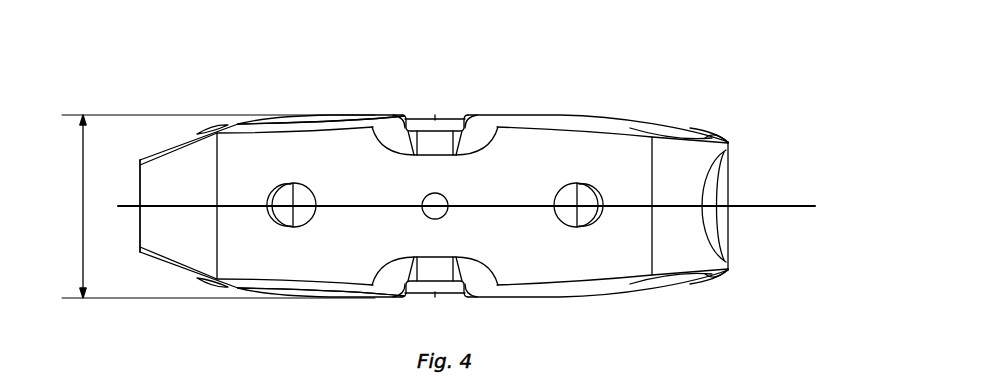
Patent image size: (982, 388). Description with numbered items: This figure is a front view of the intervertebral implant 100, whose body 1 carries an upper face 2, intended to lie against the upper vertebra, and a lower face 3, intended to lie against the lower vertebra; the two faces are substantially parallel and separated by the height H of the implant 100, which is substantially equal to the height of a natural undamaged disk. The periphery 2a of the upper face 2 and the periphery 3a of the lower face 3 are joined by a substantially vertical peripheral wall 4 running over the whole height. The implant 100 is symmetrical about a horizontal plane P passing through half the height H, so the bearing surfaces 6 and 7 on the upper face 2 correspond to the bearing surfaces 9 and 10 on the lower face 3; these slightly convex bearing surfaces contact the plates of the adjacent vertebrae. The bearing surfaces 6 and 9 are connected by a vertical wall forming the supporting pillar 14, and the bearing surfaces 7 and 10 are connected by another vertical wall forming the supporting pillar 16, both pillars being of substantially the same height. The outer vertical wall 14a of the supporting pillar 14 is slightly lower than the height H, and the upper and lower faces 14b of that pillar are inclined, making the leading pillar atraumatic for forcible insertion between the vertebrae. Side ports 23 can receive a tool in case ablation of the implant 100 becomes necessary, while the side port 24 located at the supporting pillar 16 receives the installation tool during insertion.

The implant 100 is at (698, 82).
The body 1 is at (375, 110).
The upper face 2 is at (557, 112).
The periphery of the upper face 2a is at (728, 138).
The lower face 3 is at (580, 298).
The periphery of the lower face 3a is at (725, 273).
The peripheral wall 4 is at (138, 228).
The bearing surface 6 is at (226, 128).
The bearing surface 7 is at (710, 128).
The bearing surface 9 is at (215, 277).
The bearing surface 10 is at (708, 273).
The supporting pillar 14 is at (197, 243).
The outer vertical wall of the supporting pillar 14a is at (140, 182).
The inclined upper and lower faces of the supporting pillar 14b is at (163, 143).
The supporting pillar 16 is at (673, 263).
The side ports 23 is at (285, 198).
The side port 24 is at (712, 221).
The horizontal plane P is at (788, 203).
The height H is at (218, 206).